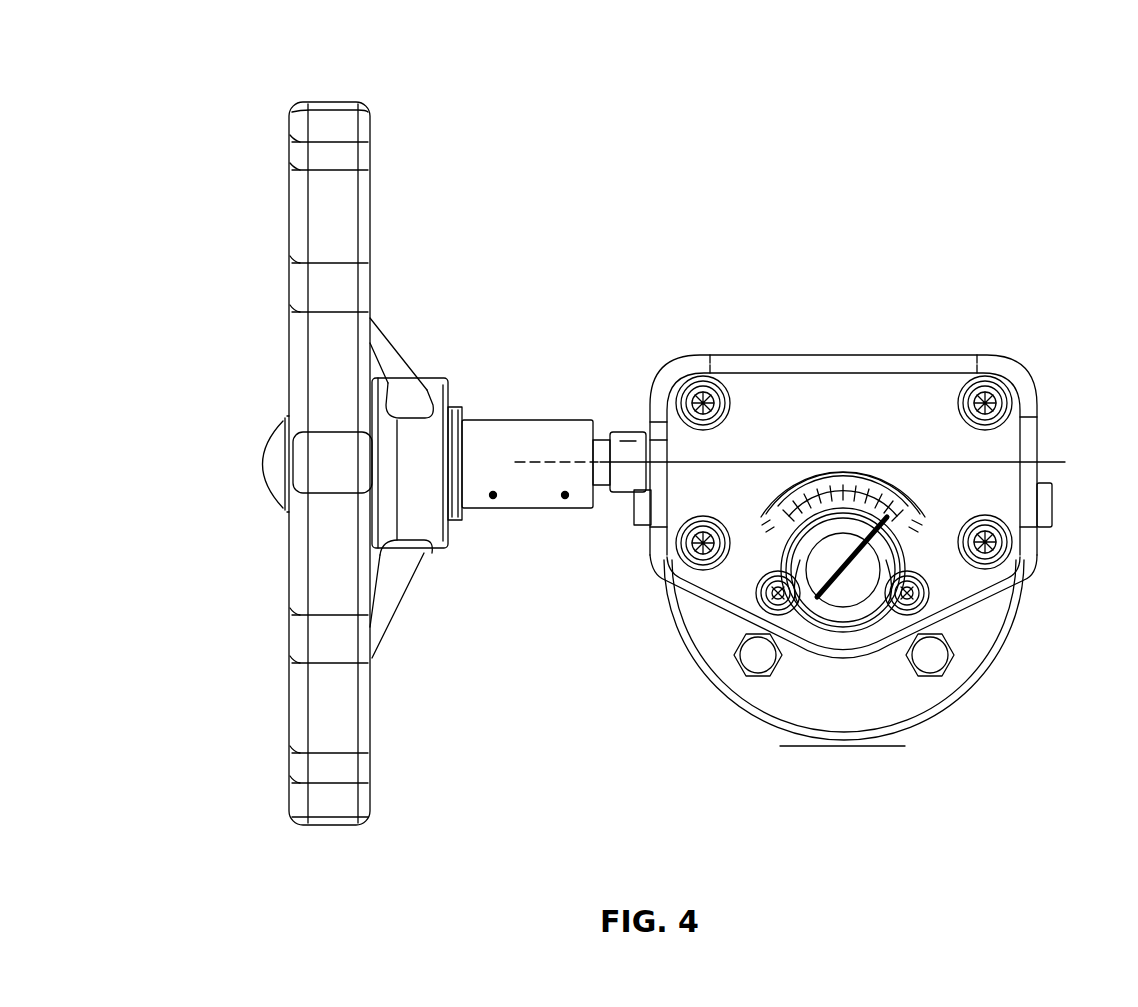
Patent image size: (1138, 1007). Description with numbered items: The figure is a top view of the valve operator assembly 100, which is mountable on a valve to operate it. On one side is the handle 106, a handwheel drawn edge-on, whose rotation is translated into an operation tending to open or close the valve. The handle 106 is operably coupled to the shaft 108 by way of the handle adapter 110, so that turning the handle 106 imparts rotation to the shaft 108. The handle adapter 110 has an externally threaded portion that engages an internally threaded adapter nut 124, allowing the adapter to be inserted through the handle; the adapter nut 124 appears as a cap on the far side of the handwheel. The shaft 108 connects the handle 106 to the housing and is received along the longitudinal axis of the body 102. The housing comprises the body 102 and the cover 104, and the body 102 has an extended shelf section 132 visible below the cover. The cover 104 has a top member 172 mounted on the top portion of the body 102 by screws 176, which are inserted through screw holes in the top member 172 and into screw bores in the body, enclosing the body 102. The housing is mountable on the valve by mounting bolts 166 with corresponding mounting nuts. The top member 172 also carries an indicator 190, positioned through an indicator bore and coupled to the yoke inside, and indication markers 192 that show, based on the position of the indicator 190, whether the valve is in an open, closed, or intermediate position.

The valve operator assembly 100 is at (103, 91).
The body 102 is at (1030, 648).
The cover 104 is at (774, 339).
The handle 106 is at (268, 222).
The shaft 108 is at (605, 441).
The handle adapter 110 is at (512, 416).
The adapter nut 124 is at (258, 468).
The extended shelf section 132 is at (778, 722).
The mounting bolts 166 is at (745, 655).
The top member 172 is at (850, 383).
The screws 176 is at (680, 555).
The indicator 190 is at (893, 556).
The indication markers 192 is at (842, 473).